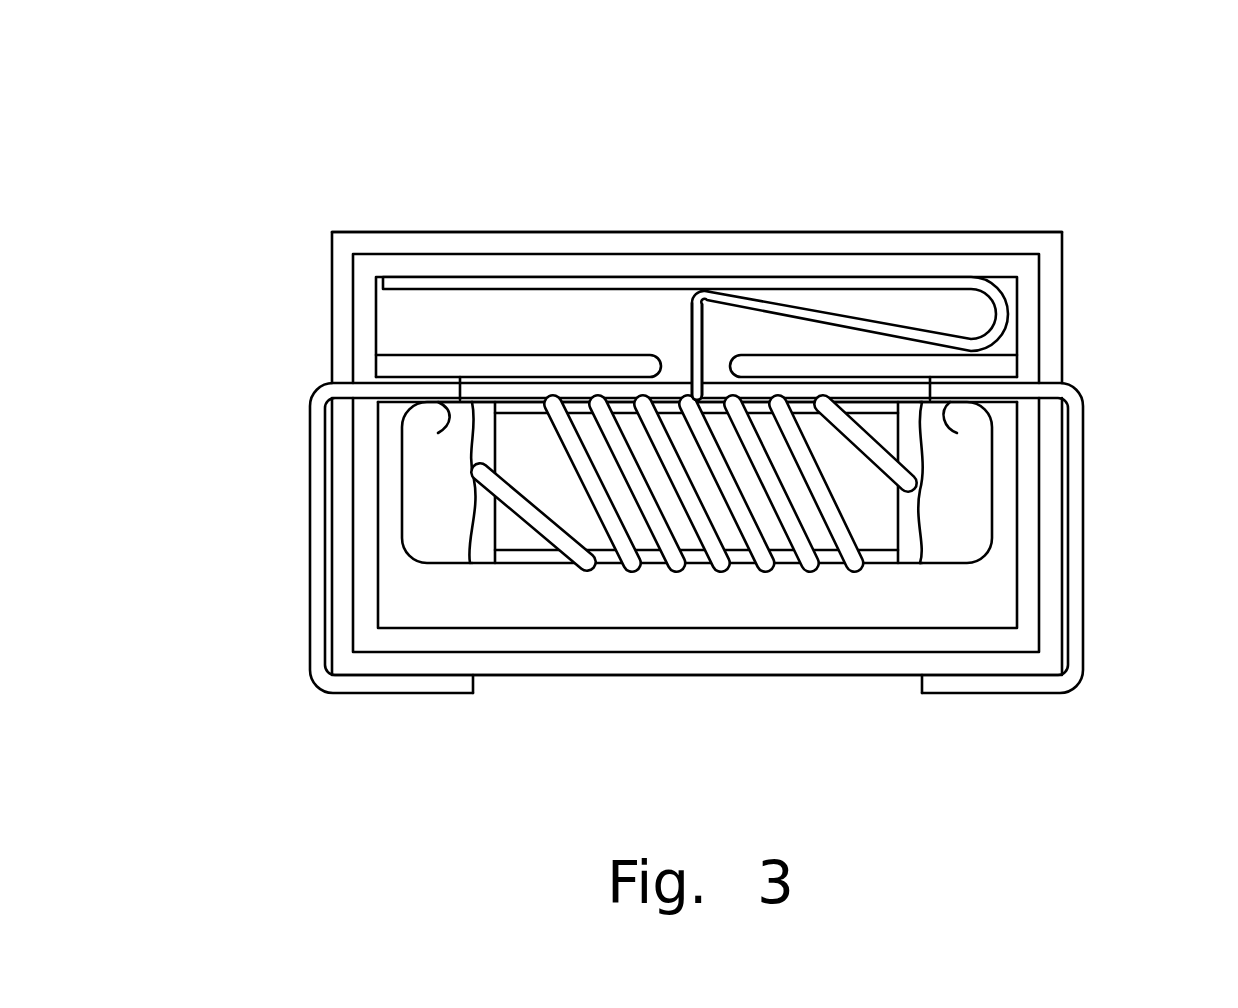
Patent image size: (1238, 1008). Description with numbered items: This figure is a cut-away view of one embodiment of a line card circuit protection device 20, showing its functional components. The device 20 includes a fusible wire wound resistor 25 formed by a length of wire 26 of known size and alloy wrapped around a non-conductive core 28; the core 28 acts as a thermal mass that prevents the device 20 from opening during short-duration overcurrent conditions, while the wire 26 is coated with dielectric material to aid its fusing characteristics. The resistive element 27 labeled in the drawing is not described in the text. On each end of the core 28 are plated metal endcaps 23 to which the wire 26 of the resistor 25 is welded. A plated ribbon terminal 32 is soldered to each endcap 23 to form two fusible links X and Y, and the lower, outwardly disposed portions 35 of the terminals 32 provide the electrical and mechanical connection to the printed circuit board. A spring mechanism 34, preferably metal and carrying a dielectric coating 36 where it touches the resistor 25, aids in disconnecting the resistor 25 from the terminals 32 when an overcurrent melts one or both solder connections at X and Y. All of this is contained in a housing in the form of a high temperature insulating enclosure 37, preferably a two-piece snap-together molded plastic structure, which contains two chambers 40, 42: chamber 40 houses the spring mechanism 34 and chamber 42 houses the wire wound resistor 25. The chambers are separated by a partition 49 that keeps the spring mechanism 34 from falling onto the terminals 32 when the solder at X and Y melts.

The line card circuit protection device 20 is at (695, 228).
The plated metal endcaps 23 is at (980, 485).
The fusible wire wound resistor 25 is at (663, 577).
The wire 26 is at (805, 567).
The core 27 is at (542, 562).
The non-conductive core 28 is at (870, 512).
The plated ribbon terminal 32 is at (308, 512).
The spring mechanism 34 is at (845, 322).
The lower outwardly disposed portions 35 is at (407, 693).
The dielectric coating 36 is at (692, 398).
The high temperature insulating enclosure 37 is at (945, 232).
The chamber 40 is at (480, 323).
The chamber 42 is at (470, 592).
The partition 49 is at (482, 367).